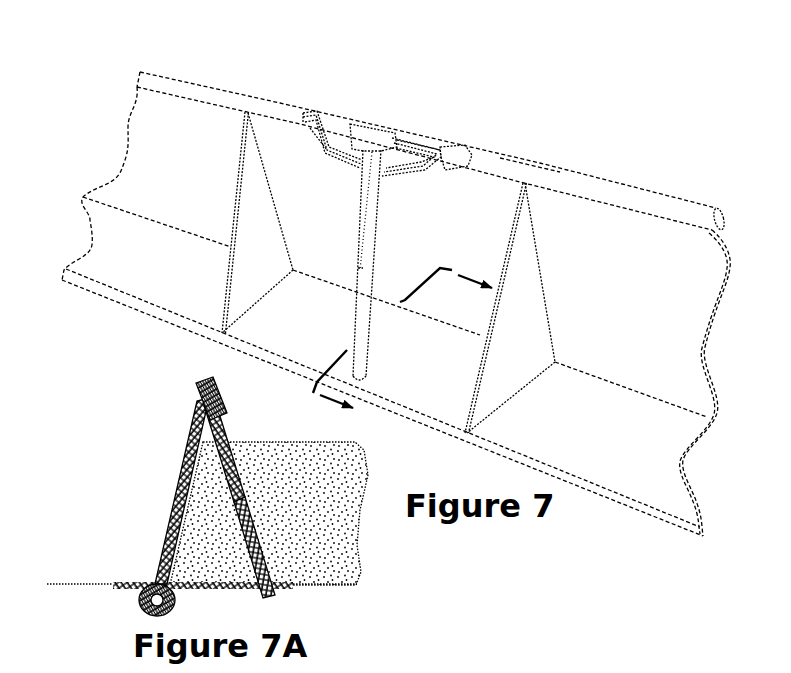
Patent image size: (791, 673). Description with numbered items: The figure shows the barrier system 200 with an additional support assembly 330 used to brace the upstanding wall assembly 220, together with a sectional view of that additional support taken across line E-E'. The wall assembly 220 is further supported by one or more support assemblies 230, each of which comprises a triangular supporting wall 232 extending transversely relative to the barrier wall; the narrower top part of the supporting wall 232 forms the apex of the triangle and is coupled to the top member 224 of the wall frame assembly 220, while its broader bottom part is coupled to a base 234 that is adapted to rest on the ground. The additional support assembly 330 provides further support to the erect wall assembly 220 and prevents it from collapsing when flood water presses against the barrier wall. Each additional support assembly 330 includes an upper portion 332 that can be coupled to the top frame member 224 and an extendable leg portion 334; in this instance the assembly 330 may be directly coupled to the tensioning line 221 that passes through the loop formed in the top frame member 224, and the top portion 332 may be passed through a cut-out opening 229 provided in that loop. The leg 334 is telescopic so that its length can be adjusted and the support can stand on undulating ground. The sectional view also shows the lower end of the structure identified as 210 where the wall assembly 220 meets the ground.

In FIG. 7, the barrier system 200 is at (468, 143).
In FIG. 7, the upstanding wall assembly 220 is at (570, 177).
In FIG. 7A, the upstanding wall assembly 220 is at (166, 525).
In FIG. 7, the tensioning line 221 is at (420, 143).
In FIG. 7, the top member 224 is at (528, 173).
In FIG. 7, the cut-out opening 229 is at (313, 137).
In FIG. 7, the support assembly 230 is at (278, 212).
In FIG. 7, the triangular supporting wall 232 is at (255, 247).
In FIG. 7, the base 234 is at (252, 307).
In FIG. 7, the additional support assembly 330 is at (377, 247).
In FIG. 7A, the additional support assembly 330 is at (233, 443).
In FIG. 7, the upper portion 332 is at (363, 127).
In FIG. 7A, the upper portion 332 is at (203, 403).
In FIG. 7, the extendable leg portion 334 is at (363, 277).
In FIG. 7A, the extendable leg portion 334 is at (247, 493).
In FIG. 7A, the ground anchor loop 210 is at (134, 586).